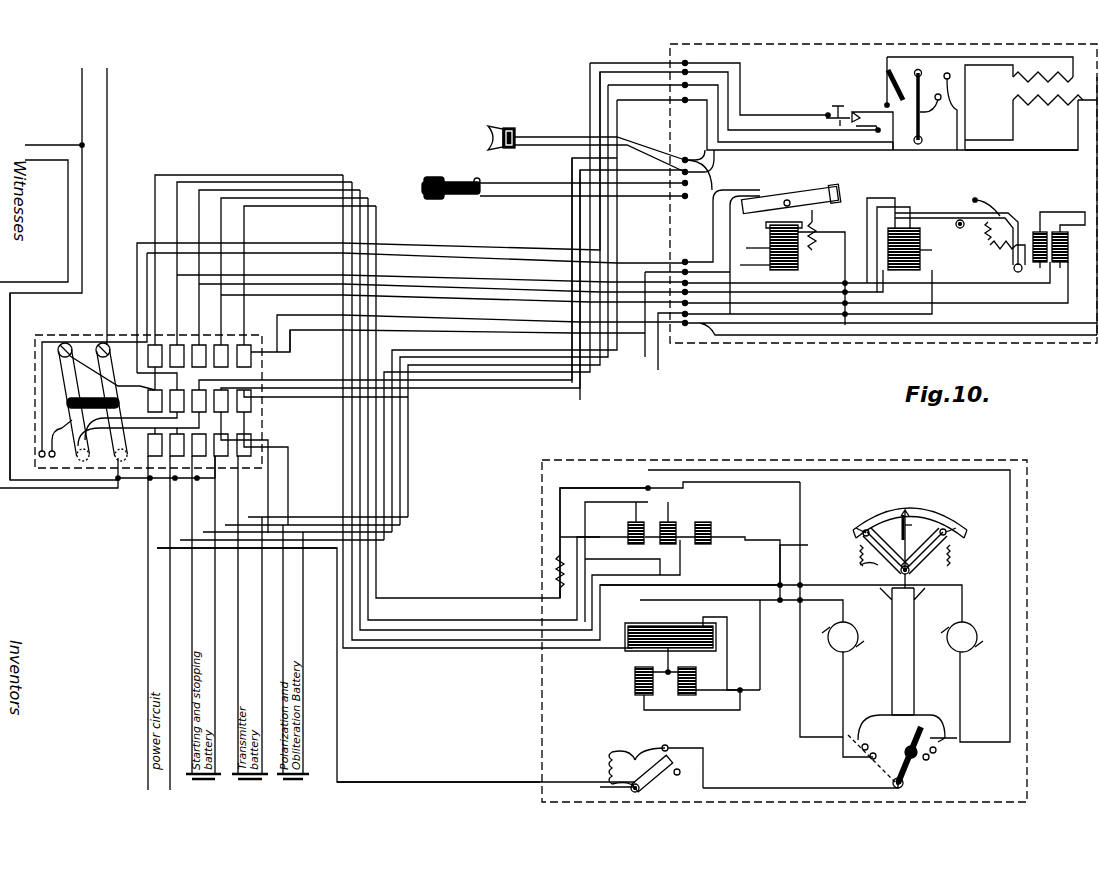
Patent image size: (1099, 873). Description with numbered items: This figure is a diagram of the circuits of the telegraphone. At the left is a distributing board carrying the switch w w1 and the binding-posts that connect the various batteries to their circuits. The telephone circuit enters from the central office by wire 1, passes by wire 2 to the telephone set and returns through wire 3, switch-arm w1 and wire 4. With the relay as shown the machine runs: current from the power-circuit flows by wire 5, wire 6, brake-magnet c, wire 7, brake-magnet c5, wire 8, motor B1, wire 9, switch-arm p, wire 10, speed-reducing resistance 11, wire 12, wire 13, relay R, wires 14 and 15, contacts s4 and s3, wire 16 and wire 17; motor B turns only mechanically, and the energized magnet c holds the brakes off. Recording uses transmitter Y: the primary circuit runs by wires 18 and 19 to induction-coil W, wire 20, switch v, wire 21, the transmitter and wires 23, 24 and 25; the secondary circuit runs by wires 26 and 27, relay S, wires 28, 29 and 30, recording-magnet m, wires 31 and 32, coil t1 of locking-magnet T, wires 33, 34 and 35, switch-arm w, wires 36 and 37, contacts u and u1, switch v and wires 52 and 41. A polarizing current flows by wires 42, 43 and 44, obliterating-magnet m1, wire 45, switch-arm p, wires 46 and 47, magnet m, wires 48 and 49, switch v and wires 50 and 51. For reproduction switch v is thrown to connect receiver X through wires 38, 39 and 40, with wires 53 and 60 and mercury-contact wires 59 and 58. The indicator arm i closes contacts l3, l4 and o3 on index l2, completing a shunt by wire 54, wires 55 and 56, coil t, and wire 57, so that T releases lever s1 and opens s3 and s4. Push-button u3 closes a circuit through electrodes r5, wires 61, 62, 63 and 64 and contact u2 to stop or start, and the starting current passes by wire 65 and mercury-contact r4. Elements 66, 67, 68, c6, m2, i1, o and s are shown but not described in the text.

The wire 1 is at (64, 274).
The wire 2 is at (53, 138).
The wire 3 is at (34, 221).
The wire 4 is at (112, 206).
The wire 5 is at (158, 627).
The wire 6 is at (396, 665).
The wire 7 is at (731, 653).
The wire 8 is at (751, 646).
The wire 9 is at (858, 704).
The wire 10 is at (612, 72).
The speed-reducing resistance 11 is at (645, 768).
The wire 12 is at (276, 255).
The wire 13 is at (416, 260).
The wire 14 is at (822, 230).
The wire 15 is at (896, 210).
The wire 16 is at (392, 540).
The wire 17 is at (148, 598).
The wire 18 is at (282, 574).
The wire 19 is at (596, 376).
The wire 20 is at (818, 199).
The wire 21 is at (970, 113).
The wire 23 is at (601, 156).
The wire 24 is at (580, 228).
The wire 25 is at (252, 615).
The wire 26 is at (1098, 178).
The wire 27 is at (808, 214).
The wire 28 is at (784, 286).
The wire 29 is at (431, 284).
The wire 30 is at (510, 660).
The wire 31 is at (368, 452).
The wire 32 is at (633, 287).
The wire 33 is at (891, 327).
The wire 34 is at (442, 274).
The wire 35 is at (131, 426).
The wire 36 is at (112, 375).
The wire 37 is at (626, 228).
The wire 38 is at (893, 136).
The wire 39 is at (584, 184).
The wire 40 is at (584, 199).
The wire 41 is at (835, 127).
The wire 42 is at (288, 650).
The wire 43 is at (453, 399).
The wire 44 is at (785, 606).
The wire 45 is at (741, 591).
The wire 46 is at (902, 746).
The wire 47 is at (825, 631).
The wire 48 is at (412, 465).
The wire 49 is at (440, 301).
The wire 50 is at (523, 273).
The wire 51 is at (270, 472).
The wire 52 is at (703, 154).
The wire 53 is at (979, 81).
The wire 54 is at (895, 689).
The wire 55 is at (236, 178).
The wire 56 is at (749, 278).
The wire 57 is at (951, 263).
The wire 58 is at (722, 226).
The wire 59 is at (791, 195).
The wire 60 is at (107, 472).
The wire 61 is at (408, 427).
The wire 62 is at (213, 615).
The wire 63 is at (191, 615).
The wire 64 is at (400, 530).
The wire 65 is at (796, 258).
The conductor 66 is at (19, 386).
The conductor 67 is at (138, 429).
The conductor 68 is at (92, 355).
The switch-arm w is at (76, 408).
The switch-arm w1 is at (120, 408).
The receiver X is at (451, 200).
The transmitter Y is at (501, 125).
The induction-coil W is at (1048, 100).
The relay R is at (777, 246).
The relay S is at (912, 249).
The locking-magnet T is at (1059, 222).
The motor B is at (968, 635).
The motor B1 is at (852, 637).
The brake-magnet c is at (670, 626).
The brake-magnet c5 is at (709, 680).
The coil c6 is at (673, 679).
The recording-magnet m is at (661, 532).
The obliterating-magnet m1 is at (728, 559).
The magnet m2 is at (602, 523).
The arm i is at (910, 541).
The needle i1 is at (915, 522).
The adjustable index l2 is at (948, 572).
The contact l3 is at (964, 533).
The contact l4 is at (905, 538).
The contact o is at (863, 563).
The contact o3 is at (902, 644).
The switch-arm p is at (916, 780).
The contact u is at (838, 123).
The contact u1 is at (872, 117).
The contact u2 is at (873, 120).
The push-button u3 is at (839, 102).
The switch v is at (935, 110).
The spring s is at (984, 235).
The lever s1 is at (951, 222).
The contact s3 is at (986, 194).
The contact s4 is at (998, 212).
The mercury-contact r4 is at (842, 200).
The electrodes r5 is at (754, 245).
The coil t is at (1040, 268).
The coil t1 is at (1063, 268).